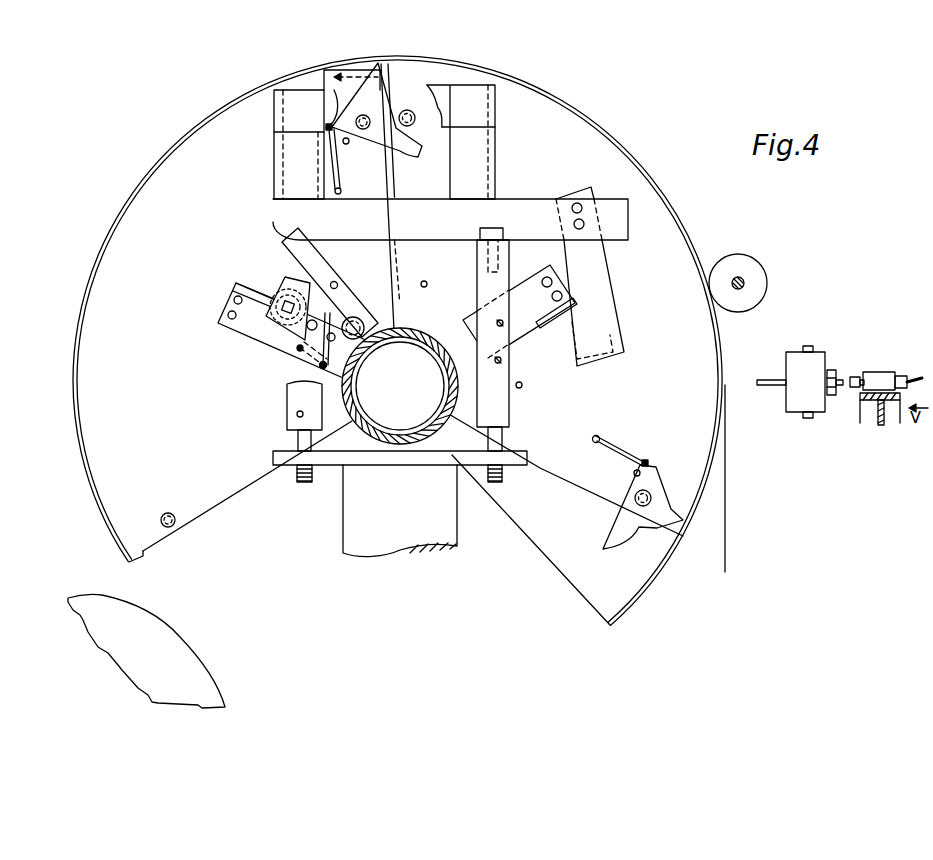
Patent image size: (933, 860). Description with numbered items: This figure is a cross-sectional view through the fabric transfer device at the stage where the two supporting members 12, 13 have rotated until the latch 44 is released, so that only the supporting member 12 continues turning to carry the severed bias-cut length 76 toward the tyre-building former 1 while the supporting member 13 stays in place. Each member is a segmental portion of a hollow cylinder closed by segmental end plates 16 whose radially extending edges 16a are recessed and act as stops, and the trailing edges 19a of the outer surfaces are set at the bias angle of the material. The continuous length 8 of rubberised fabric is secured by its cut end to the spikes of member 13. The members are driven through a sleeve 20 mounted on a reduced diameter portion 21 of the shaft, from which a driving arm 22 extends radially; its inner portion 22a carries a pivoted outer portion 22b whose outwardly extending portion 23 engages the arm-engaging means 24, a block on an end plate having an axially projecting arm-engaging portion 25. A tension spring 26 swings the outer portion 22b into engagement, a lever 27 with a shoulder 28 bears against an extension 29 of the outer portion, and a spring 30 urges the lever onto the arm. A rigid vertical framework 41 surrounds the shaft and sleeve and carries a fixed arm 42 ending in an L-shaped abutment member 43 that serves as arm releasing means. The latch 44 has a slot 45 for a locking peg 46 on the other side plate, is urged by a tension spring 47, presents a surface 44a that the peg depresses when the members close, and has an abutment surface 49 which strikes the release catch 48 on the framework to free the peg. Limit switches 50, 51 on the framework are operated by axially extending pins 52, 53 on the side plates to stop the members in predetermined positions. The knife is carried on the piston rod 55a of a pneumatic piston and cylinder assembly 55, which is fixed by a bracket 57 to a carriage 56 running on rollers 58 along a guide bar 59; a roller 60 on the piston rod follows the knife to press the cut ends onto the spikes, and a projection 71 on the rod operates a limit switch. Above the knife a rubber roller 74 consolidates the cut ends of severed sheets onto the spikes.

The tyre-building former 1 is at (186, 633).
The continuous length of bias-cut rubberised fabric material 8 is at (728, 548).
The supporting member 12 is at (244, 472).
The supporting member 13 is at (556, 468).
The segmental end plate 16 is at (203, 512).
The radially extending edges of side plate 16a is at (233, 498).
The trailing edges of outer peripheral surfaces 19a is at (384, 71).
The sleeve 20 is at (397, 331).
The reduced diameter portion of shaft 21 is at (389, 347).
The driving arm 22 is at (285, 330).
The radially inner portion of driving arm 22a is at (337, 387).
The radially outer portion of driving arm 22b is at (253, 338).
The outwardly extending portion 23 is at (276, 288).
The arm-engaging means 24 is at (218, 323).
The arm-engaging portion 25 is at (236, 286).
The tension spring 26 is at (293, 356).
The lever 27 is at (344, 283).
The shoulder 28 is at (450, 219).
The extension 29 is at (300, 277).
The spring 30 is at (341, 370).
The rigid vertical framework 41 is at (510, 372).
The fixed arm 42 is at (621, 300).
The L-shaped axially extending abutment member 43 is at (626, 351).
The latch 44 is at (418, 152).
The latch surface 44a is at (626, 572).
The slot 45 is at (381, 147).
The locking peg 46 is at (416, 105).
The tension spring 47 is at (342, 188).
The release catch 48 is at (332, 74).
The abutment surface 49 is at (334, 104).
The limit switch 50 is at (519, 311).
The limit switch 51 is at (503, 359).
The axially extending pin 52 is at (523, 384).
The axially extending pin 53 is at (296, 414).
The pneumatic piston and cylinder assembly 55 is at (900, 375).
The piston rod 55a is at (852, 377).
The carriage 56 is at (860, 414).
The bracket 57 is at (875, 372).
The rollers 58 is at (857, 398).
The guide bar 59 is at (878, 420).
The roller 60 is at (818, 352).
The projection 71 is at (828, 380).
The rubber roller 74 is at (741, 255).
The severed bias-cut length 76 is at (205, 127).